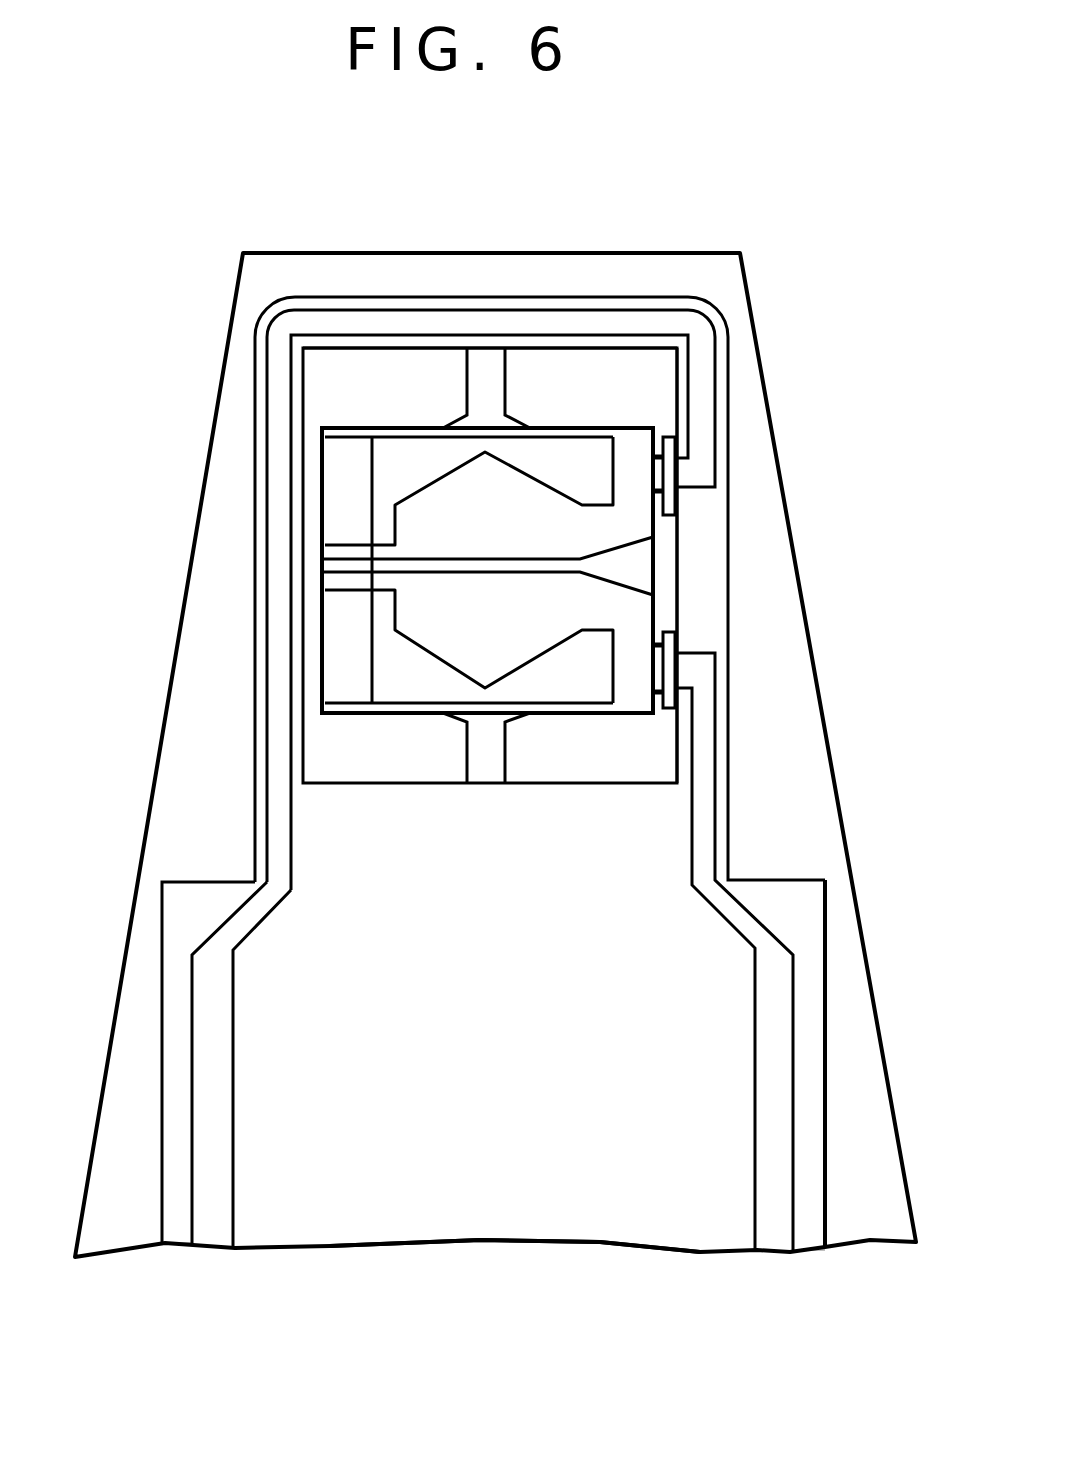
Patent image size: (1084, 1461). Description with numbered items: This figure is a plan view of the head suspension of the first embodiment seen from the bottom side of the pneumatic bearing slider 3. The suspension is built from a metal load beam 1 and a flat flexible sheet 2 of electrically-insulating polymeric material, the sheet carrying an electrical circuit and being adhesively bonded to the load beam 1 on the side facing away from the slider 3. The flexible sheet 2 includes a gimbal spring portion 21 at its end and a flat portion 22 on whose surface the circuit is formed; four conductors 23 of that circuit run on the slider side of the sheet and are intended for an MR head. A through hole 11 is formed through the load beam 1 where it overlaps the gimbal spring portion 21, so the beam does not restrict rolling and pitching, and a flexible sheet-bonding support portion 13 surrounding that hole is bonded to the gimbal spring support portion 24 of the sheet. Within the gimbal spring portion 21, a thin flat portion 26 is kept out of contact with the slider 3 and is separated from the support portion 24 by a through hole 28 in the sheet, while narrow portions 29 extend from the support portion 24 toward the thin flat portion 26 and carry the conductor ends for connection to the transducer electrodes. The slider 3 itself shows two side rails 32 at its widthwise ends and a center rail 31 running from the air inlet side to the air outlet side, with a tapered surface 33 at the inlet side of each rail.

The load beam 1 is at (787, 803).
The flexible sheet 2 is at (828, 1110).
The pneumatic bearing slider 3 is at (640, 527).
The through hole 11 is at (663, 404).
The flexible sheet-bonding support portion 13 is at (228, 397).
The gimbal spring portion 21 is at (530, 372).
The flat portion 22 is at (485, 1242).
The conductors 23 is at (195, 1250).
The gimbal spring support portion 24 is at (385, 322).
The thin flat portion 26 is at (488, 363).
The through hole 28 is at (604, 404).
The narrow portions 29 is at (668, 478).
The center rail 31 is at (640, 570).
The side rails 32 is at (385, 475).
The tapered surface 33 is at (338, 512).